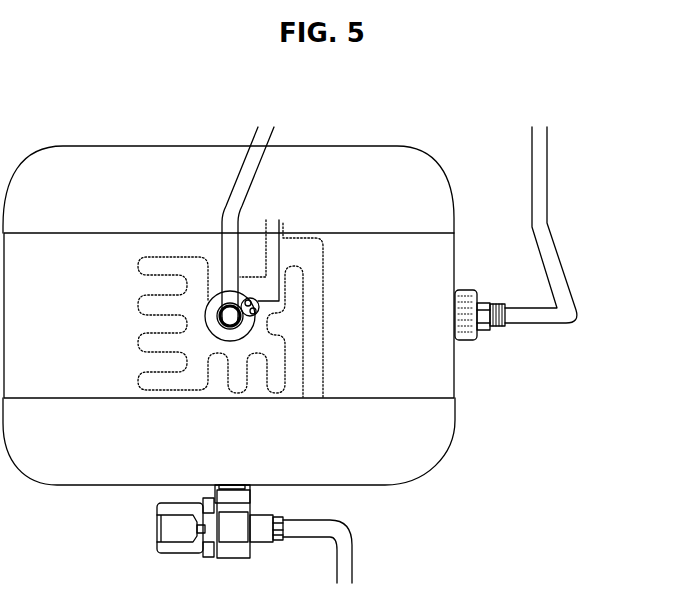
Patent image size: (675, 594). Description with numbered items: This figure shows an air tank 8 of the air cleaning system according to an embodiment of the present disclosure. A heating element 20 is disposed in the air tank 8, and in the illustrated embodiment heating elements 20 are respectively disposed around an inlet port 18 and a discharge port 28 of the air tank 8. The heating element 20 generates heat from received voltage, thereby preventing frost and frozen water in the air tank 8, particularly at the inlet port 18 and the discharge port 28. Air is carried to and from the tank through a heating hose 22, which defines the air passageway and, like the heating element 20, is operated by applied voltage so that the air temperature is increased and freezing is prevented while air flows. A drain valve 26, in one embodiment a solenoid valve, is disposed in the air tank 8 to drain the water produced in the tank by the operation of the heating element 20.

The air tank 8 is at (440, 378).
The inlet port 18 is at (204, 288).
The heating element 20 is at (325, 256).
The heating hose 22 is at (246, 173).
The drain valve 26 is at (170, 527).
The discharge port 28 is at (466, 279).